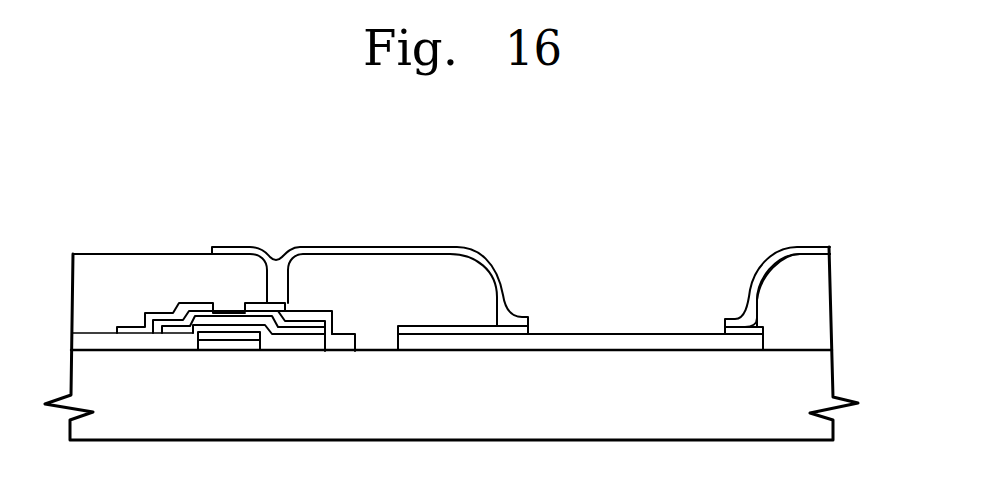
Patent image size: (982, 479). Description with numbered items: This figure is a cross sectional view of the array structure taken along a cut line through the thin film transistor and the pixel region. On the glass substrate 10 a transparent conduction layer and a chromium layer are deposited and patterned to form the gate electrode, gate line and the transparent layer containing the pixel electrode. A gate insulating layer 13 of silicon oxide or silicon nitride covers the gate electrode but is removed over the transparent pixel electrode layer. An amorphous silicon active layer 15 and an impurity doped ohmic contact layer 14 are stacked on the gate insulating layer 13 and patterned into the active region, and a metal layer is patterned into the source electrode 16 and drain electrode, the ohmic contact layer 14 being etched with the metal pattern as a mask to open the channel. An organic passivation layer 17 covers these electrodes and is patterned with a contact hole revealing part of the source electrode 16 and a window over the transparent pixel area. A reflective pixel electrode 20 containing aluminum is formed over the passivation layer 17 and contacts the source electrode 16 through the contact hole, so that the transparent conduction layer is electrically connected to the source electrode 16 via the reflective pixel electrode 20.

The substrate 10 is at (813, 375).
The gate insulating layer 13 is at (120, 343).
The ohmic contact layer 14 is at (285, 321).
The active layer 15 is at (162, 343).
The source electrode 16 is at (347, 343).
The passivation layer 17 is at (813, 303).
The reflective pixel electrode 20 is at (403, 245).